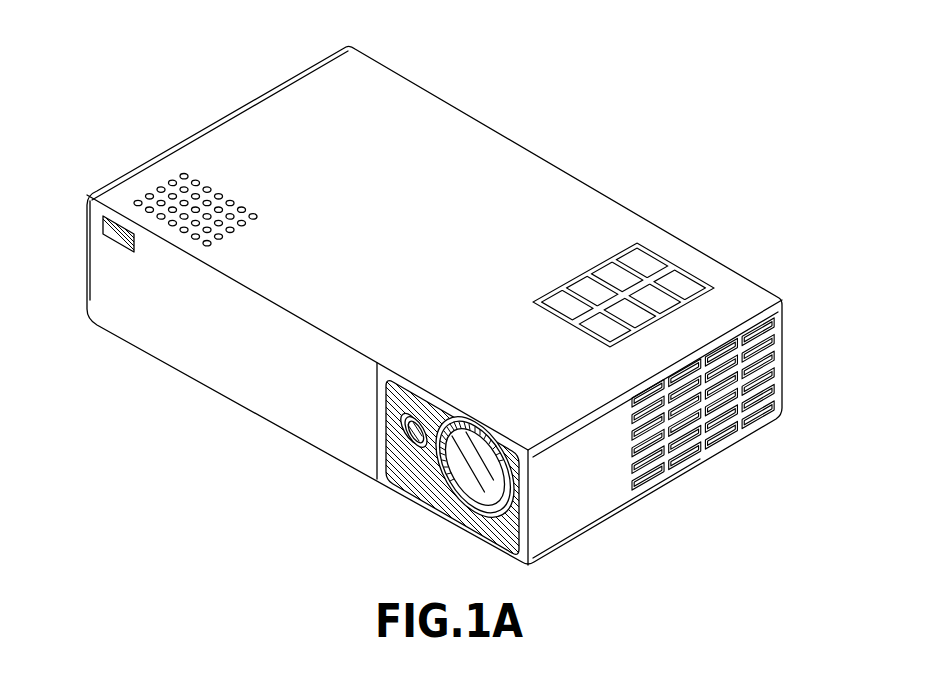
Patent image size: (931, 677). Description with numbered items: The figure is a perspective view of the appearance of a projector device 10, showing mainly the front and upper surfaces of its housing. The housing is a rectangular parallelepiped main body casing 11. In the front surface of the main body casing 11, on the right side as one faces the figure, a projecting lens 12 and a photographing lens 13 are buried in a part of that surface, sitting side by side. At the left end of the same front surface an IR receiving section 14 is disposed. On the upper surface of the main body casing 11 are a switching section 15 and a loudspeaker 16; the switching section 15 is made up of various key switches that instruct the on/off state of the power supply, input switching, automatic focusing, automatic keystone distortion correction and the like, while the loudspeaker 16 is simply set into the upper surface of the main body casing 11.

The projector device 10 is at (586, 97).
The main body casing 11 is at (313, 117).
The projecting lens 12 is at (474, 440).
The photographing lens 13 is at (415, 422).
The IR receiving section 14 is at (135, 250).
The switching section 15 is at (592, 238).
The loudspeaker 16 is at (225, 203).